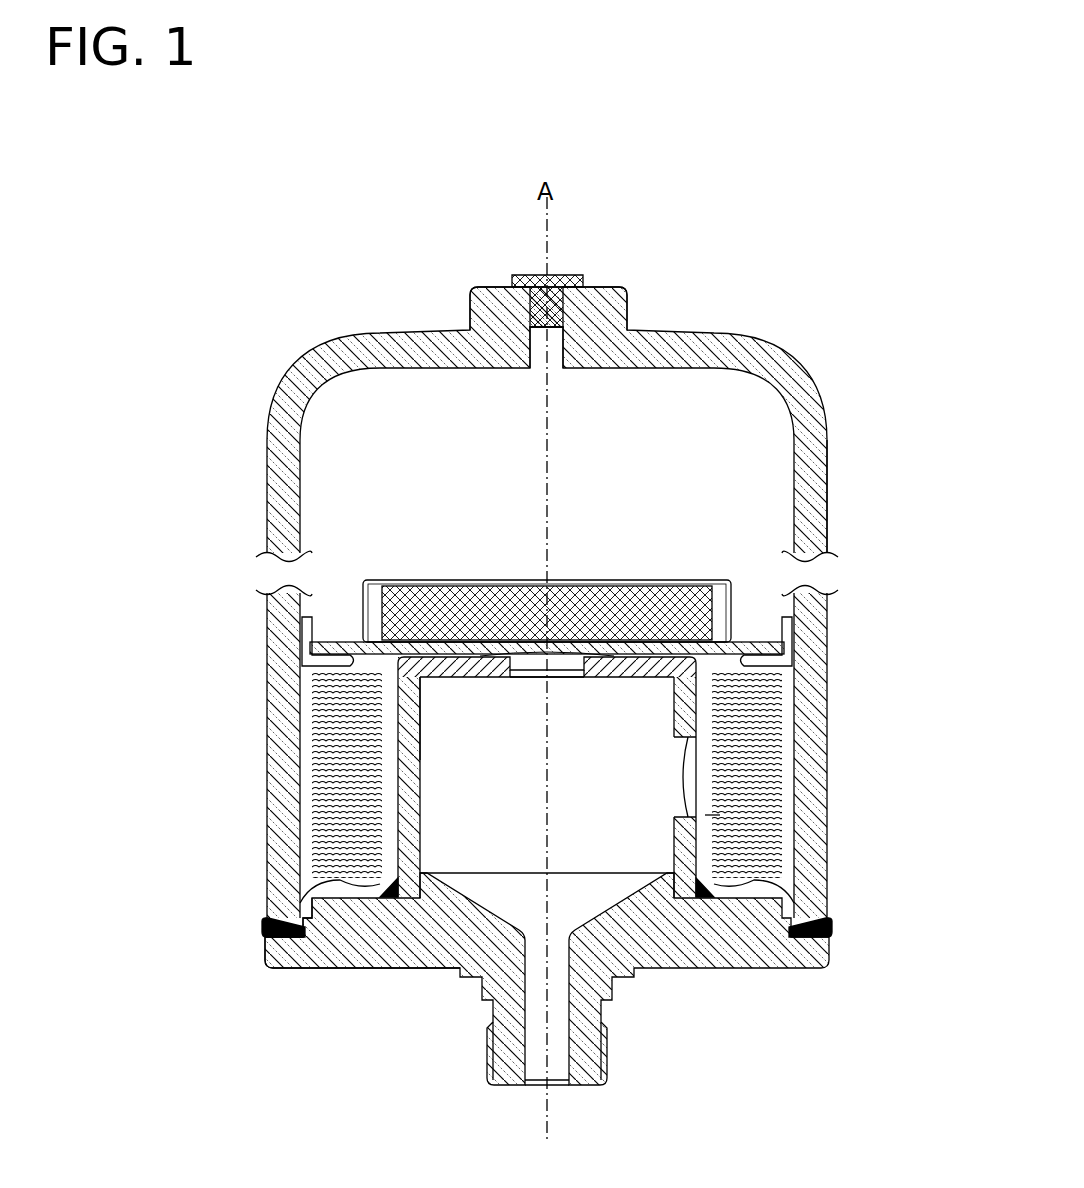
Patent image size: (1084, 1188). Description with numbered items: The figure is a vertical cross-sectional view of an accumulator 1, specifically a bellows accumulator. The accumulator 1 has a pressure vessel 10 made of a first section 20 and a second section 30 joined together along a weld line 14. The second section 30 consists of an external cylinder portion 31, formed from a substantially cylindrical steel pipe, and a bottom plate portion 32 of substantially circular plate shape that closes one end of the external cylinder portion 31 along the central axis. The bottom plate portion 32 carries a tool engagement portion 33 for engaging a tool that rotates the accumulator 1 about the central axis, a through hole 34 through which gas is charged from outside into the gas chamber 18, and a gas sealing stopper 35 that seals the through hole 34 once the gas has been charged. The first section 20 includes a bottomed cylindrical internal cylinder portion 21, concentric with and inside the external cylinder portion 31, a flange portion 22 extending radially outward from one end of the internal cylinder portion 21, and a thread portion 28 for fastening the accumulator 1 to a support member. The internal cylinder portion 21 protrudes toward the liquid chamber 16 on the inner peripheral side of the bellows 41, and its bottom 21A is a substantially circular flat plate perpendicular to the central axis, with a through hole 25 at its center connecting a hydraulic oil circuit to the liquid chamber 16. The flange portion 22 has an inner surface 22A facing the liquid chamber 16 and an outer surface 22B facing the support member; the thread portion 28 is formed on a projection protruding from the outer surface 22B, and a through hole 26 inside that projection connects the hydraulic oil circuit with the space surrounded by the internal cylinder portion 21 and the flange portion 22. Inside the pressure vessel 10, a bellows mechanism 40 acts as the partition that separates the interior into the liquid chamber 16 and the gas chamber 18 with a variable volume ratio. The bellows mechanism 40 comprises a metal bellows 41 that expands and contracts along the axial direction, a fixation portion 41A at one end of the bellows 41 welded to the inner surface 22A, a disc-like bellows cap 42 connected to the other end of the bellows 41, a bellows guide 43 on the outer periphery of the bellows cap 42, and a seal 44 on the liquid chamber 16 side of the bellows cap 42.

The accumulator 1 is at (563, 86).
The pressure vessel 10 is at (98, 515).
The weld line 14 is at (833, 922).
The liquid chamber 16 is at (725, 817).
The gas chamber 18 is at (752, 473).
The first section 20 is at (148, 847).
The internal cylinder portion 21 is at (313, 840).
The bottom of internal cylinder portion 21A is at (422, 683).
The flange portion 22 is at (195, 900).
The inner surface 22A is at (266, 923).
The outer surface 22B is at (310, 968).
The through hole 25 is at (560, 680).
The through hole 26 is at (565, 1055).
The thread portion 28 is at (625, 1022).
The second section 30 is at (165, 385).
The external cylinder portion 31 is at (265, 640).
The bottom plate portion 32 is at (363, 334).
The tool engagement portion 33 is at (628, 293).
The through hole 34 is at (553, 367).
The gas sealing stopper 35 is at (565, 273).
The bellows mechanism 40 is at (904, 503).
The bellows 41 is at (750, 718).
The fixation portion 41A is at (720, 892).
The bellows cap 42 is at (700, 565).
The bellows guide 43 is at (745, 622).
The seal 44 is at (742, 665).